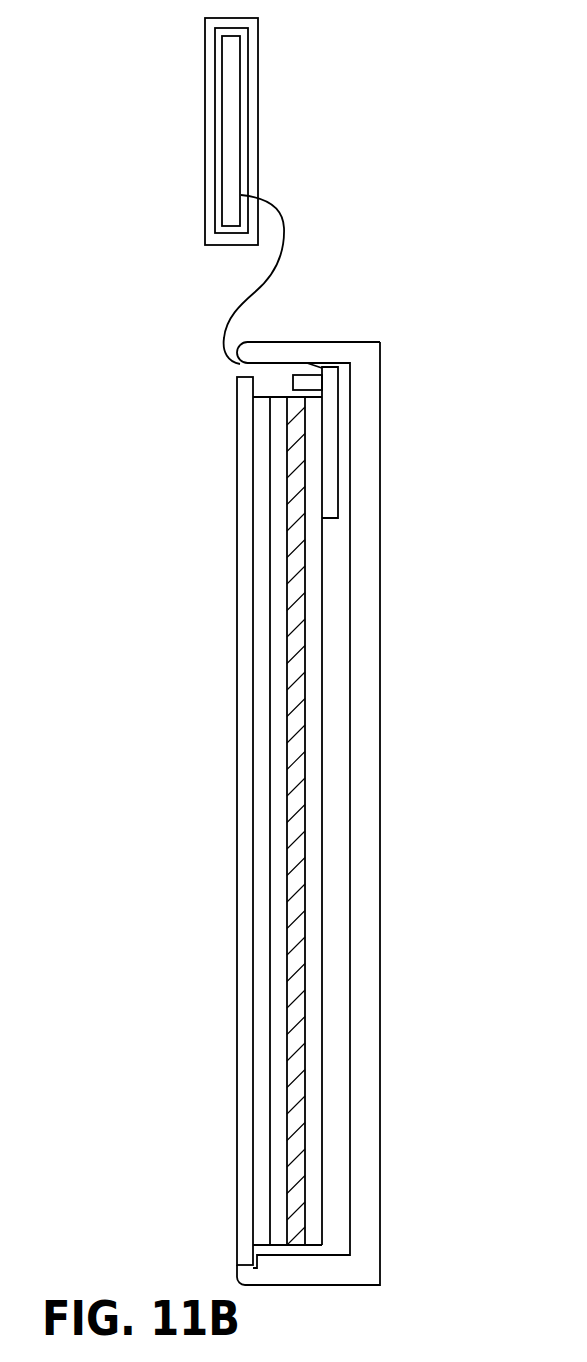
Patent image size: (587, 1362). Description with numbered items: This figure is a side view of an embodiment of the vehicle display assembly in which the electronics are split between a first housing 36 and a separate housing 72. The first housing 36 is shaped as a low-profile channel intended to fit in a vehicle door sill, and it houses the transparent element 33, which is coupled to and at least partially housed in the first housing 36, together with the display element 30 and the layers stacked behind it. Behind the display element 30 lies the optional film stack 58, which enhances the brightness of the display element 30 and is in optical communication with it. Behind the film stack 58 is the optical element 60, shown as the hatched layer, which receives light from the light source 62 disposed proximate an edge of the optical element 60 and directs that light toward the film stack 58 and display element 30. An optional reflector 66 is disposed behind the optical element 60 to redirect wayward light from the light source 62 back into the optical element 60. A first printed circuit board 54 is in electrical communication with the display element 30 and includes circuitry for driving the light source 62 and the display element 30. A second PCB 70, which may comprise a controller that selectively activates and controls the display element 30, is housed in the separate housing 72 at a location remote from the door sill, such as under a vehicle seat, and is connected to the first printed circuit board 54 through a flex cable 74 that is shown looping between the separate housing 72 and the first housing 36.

The second PCB 70 is at (232, 65).
The separate housing 72 is at (253, 115).
The flex cable 74 is at (283, 222).
The light source 62 is at (307, 376).
The transparent element 33 is at (242, 418).
The first housing 36 is at (360, 542).
The first printed circuit board 54 is at (330, 418).
The display element 30 is at (260, 932).
The film stack 58 is at (275, 1000).
The optical element 60 is at (293, 1065).
The reflector 66 is at (310, 1147).